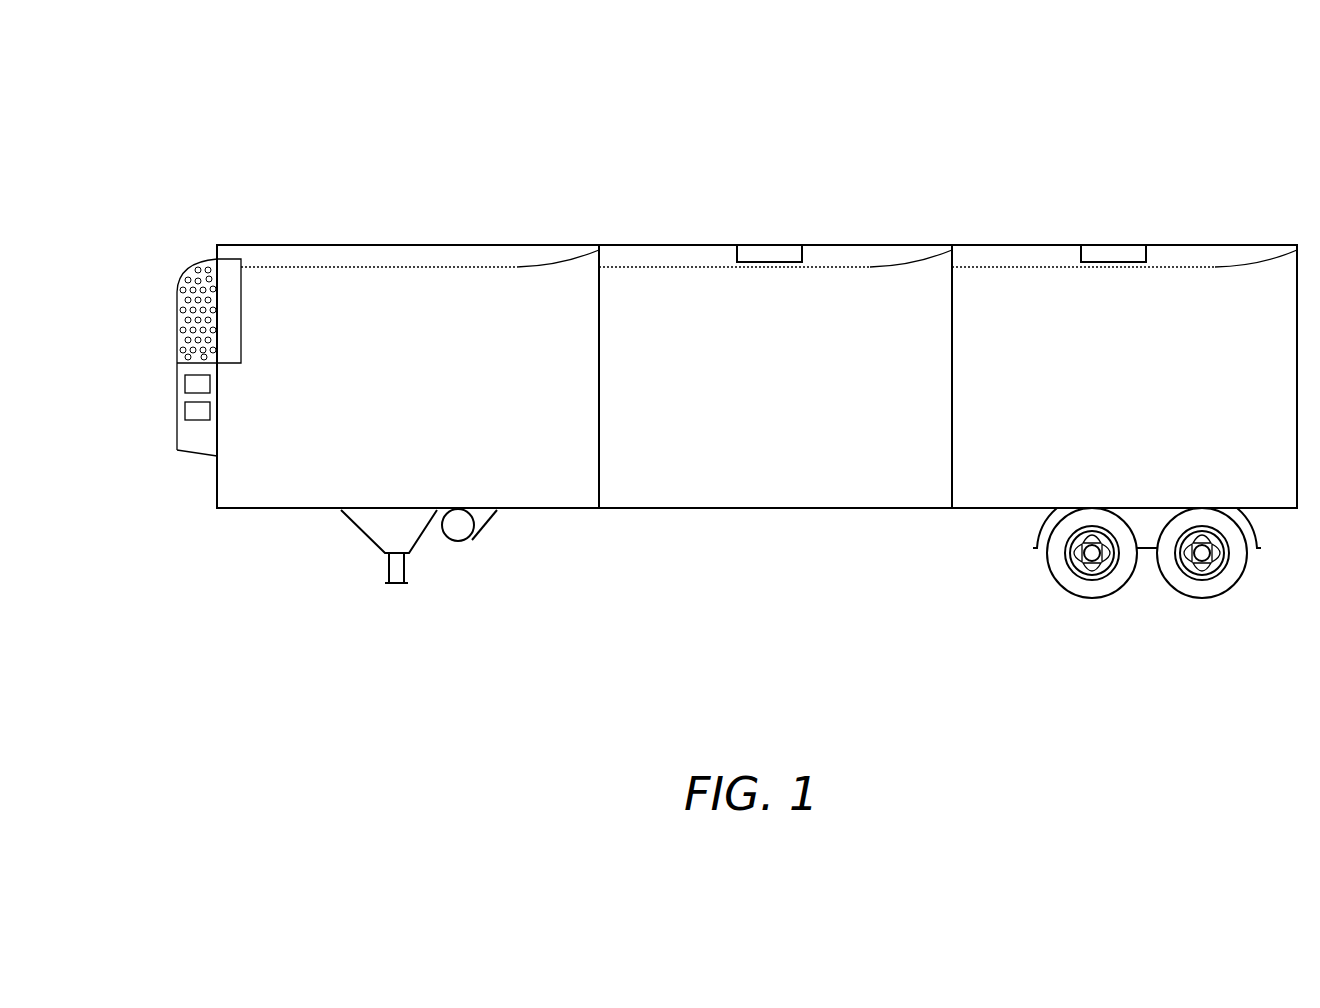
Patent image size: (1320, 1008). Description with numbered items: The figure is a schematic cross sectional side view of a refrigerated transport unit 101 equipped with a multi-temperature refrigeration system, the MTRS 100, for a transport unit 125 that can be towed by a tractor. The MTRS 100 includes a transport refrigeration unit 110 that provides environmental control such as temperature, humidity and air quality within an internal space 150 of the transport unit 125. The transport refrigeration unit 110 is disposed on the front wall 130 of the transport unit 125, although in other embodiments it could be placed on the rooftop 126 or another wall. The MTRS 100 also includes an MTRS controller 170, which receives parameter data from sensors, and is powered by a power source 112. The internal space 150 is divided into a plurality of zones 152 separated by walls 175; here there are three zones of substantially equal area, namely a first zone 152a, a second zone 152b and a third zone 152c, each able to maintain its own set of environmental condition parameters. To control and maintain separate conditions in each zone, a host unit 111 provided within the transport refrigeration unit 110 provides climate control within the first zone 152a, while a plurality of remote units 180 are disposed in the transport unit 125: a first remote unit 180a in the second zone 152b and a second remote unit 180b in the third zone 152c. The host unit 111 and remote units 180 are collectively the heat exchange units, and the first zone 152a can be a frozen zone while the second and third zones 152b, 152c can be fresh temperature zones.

The MTRS 100 is at (478, 160).
The transport unit (trailer) 101 is at (612, 230).
The transport refrigeration unit 110 is at (178, 445).
The host unit 111 is at (160, 263).
The power source 112 is at (197, 411).
The transport unit 125 is at (1252, 245).
The rooftop 126 is at (370, 245).
The front wall 130 is at (216, 484).
The internal space 150 is at (247, 459).
The zones 152 is at (1047, 597).
The first zone 152a is at (302, 458).
The second zone 152b is at (731, 460).
The third zone 152c is at (1008, 460).
The MTRS controller 170 is at (197, 384).
The walls 175 is at (600, 458).
The remote units 180 is at (1158, 197).
The first remote unit 180a is at (770, 255).
The second remote unit 180b is at (1114, 255).